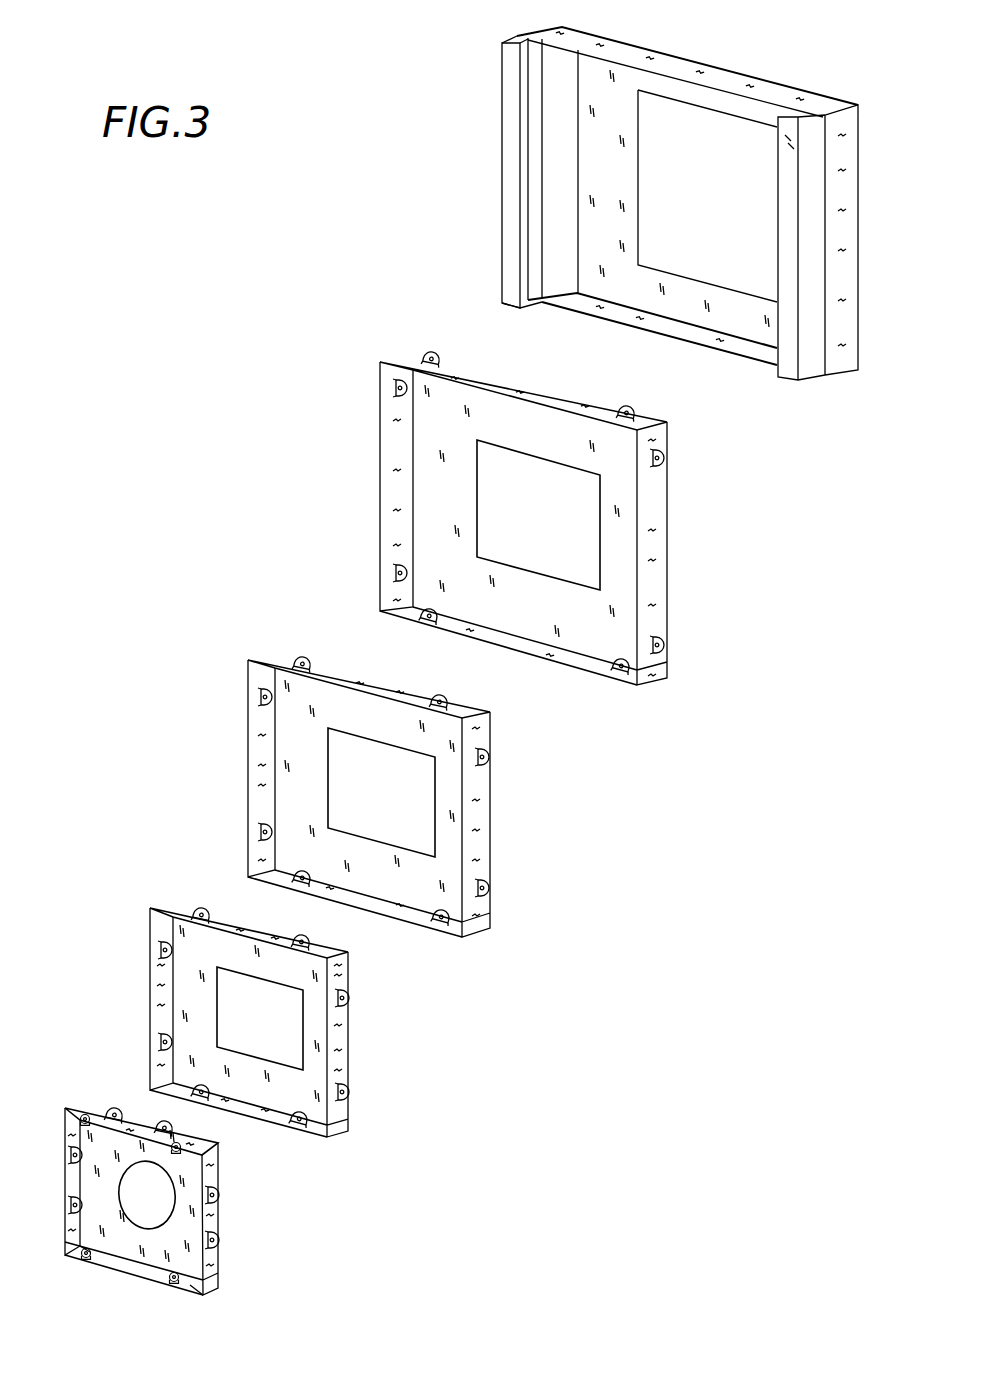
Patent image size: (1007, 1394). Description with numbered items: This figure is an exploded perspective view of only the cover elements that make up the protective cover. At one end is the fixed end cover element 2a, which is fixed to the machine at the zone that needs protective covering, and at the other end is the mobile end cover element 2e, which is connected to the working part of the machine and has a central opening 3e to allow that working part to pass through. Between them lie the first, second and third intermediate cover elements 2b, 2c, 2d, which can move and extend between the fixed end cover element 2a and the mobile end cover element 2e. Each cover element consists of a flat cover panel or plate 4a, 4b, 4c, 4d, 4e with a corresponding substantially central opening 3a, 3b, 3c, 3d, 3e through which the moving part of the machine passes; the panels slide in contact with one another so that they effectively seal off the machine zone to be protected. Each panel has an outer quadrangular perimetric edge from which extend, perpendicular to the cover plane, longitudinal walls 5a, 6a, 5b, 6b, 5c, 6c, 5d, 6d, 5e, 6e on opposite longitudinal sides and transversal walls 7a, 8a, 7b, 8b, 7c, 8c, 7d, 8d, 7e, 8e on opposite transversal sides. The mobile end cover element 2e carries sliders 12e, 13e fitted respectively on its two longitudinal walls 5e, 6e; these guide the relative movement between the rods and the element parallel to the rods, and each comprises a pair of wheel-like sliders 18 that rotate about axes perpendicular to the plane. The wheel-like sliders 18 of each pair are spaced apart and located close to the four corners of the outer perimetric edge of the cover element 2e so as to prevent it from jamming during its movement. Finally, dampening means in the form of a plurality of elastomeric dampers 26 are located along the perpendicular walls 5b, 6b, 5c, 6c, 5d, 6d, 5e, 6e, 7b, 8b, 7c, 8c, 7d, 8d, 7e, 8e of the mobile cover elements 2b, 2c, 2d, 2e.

The end cover element 2a is at (478, 150).
The opening 3a is at (717, 168).
The cover panel 4a is at (745, 312).
The longitudinal wall 5a is at (582, 307).
The longitudinal wall 6a is at (675, 65).
The transversal wall 7a is at (838, 347).
The transversal wall 8a is at (558, 62).
The first intermediate cover element 2b is at (357, 385).
The opening 3b is at (537, 490).
The cover panel 4b is at (470, 578).
The longitudinal wall 5b is at (596, 668).
The longitudinal wall 6b is at (498, 386).
The transversal wall 7b is at (647, 492).
The transversal wall 8b is at (397, 458).
The second intermediate cover element 2c is at (233, 792).
The opening 3c is at (372, 772).
The cover panel 4c is at (328, 848).
The longitudinal wall 5c is at (410, 915).
The longitudinal wall 6c is at (268, 655).
The transversal wall 7c is at (482, 788).
The transversal wall 8c is at (263, 746).
The third intermediate cover element 2d is at (357, 1038).
The opening 3d is at (232, 990).
The cover panel 4d is at (210, 1057).
The longitudinal wall 5d is at (168, 1085).
The longitudinal wall 6d is at (178, 908).
The transversal wall 7d is at (340, 1058).
The transversal wall 8d is at (158, 927).
The mobile end cover element 2e is at (52, 1141).
The central opening 3e is at (135, 1185).
The cover panel 4e is at (186, 1253).
The longitudinal wall 5e is at (125, 1272).
The longitudinal wall 6e is at (137, 1120).
The transversal wall 7e is at (217, 1175).
The transversal wall 8e is at (70, 1185).
The slider 12e is at (85, 1262).
The slider 13e is at (82, 1118).
The wheel-like slider 18 is at (97, 1117).
The elastomeric damper 26 is at (428, 352).